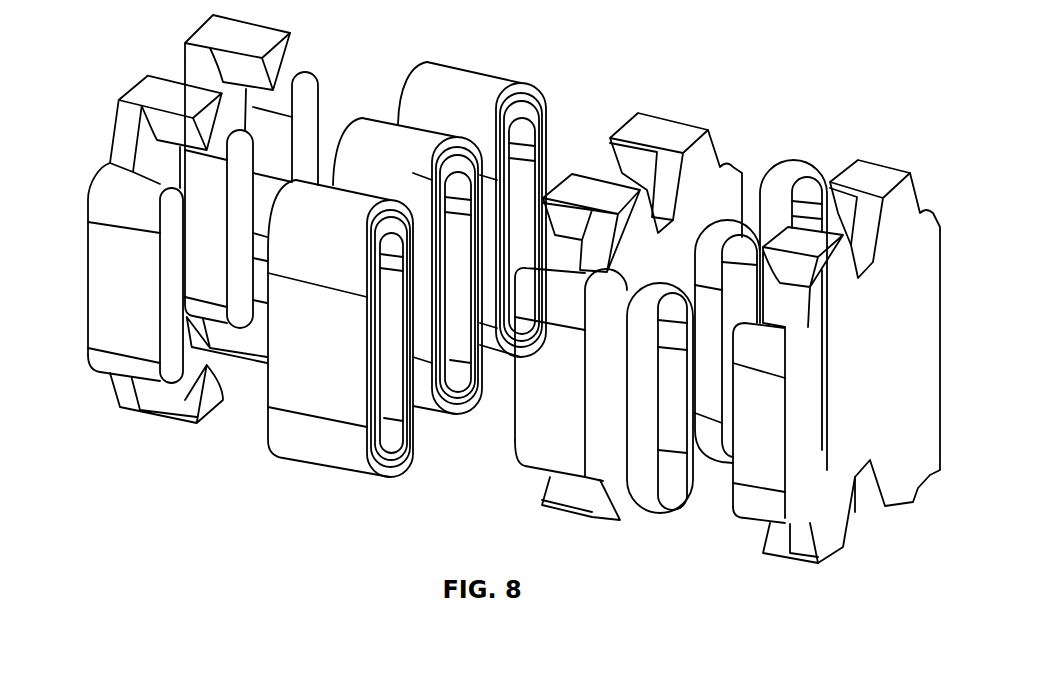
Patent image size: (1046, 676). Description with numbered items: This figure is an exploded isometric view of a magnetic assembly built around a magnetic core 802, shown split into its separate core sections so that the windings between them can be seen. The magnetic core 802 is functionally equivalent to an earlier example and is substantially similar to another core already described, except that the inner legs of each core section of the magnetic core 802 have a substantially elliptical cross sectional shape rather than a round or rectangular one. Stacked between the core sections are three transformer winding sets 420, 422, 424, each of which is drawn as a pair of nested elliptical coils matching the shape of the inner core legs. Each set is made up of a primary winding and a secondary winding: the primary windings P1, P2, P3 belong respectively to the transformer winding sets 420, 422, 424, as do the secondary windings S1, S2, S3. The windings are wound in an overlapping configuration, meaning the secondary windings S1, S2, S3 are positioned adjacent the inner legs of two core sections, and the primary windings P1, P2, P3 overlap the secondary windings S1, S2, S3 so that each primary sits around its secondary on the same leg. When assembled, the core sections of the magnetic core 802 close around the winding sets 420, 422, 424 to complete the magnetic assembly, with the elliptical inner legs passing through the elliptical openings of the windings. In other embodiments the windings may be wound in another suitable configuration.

The magnetic core 802 is at (122, 342).
The transformer winding set 420 is at (272, 476).
The transformer winding set 422 is at (362, 84).
The transformer winding set 424 is at (484, 45).
The primary winding P1 is at (345, 435).
The primary winding P2 is at (423, 397).
The primary winding P3 is at (528, 88).
The secondary winding S1 is at (385, 445).
The secondary winding S2 is at (455, 385).
The secondary winding S3 is at (532, 117).